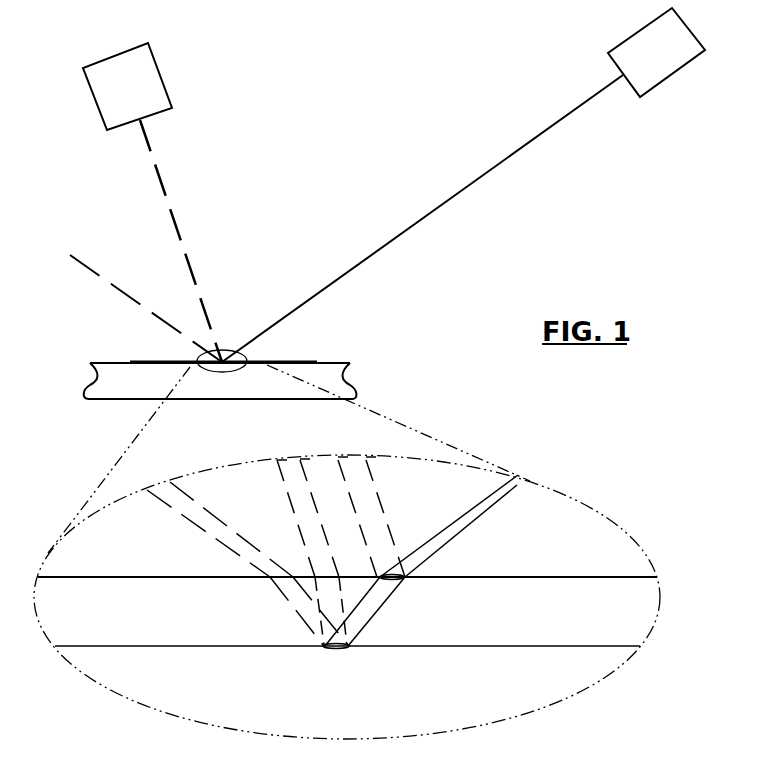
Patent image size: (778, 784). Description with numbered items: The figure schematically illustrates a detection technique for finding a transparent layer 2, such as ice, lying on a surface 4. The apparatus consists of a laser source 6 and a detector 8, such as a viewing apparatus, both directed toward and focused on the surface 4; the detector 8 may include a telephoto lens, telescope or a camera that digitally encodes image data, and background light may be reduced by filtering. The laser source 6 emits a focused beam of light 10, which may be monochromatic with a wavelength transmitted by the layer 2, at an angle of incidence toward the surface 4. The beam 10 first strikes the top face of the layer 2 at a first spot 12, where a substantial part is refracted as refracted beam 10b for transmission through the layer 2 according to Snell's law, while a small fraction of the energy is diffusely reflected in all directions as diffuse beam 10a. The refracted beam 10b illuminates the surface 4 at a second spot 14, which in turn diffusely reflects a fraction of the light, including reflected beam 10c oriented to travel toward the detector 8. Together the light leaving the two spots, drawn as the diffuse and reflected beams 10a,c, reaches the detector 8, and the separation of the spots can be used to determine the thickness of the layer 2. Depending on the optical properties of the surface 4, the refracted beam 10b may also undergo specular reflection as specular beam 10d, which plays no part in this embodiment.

The layer 2 is at (287, 363).
The surface 4 is at (338, 362).
The laser source 6 is at (627, 48).
The detector 8 is at (105, 70).
The beam of light 10 is at (535, 135).
The diffuse beam 10a is at (383, 507).
The diffuse and reflected beams 10a,c is at (163, 176).
The refracted beam 10b is at (367, 613).
The reflected beam 10c is at (287, 490).
The specular beam 10d is at (187, 527).
The first spot 12 is at (403, 582).
The second spot 14 is at (330, 648).